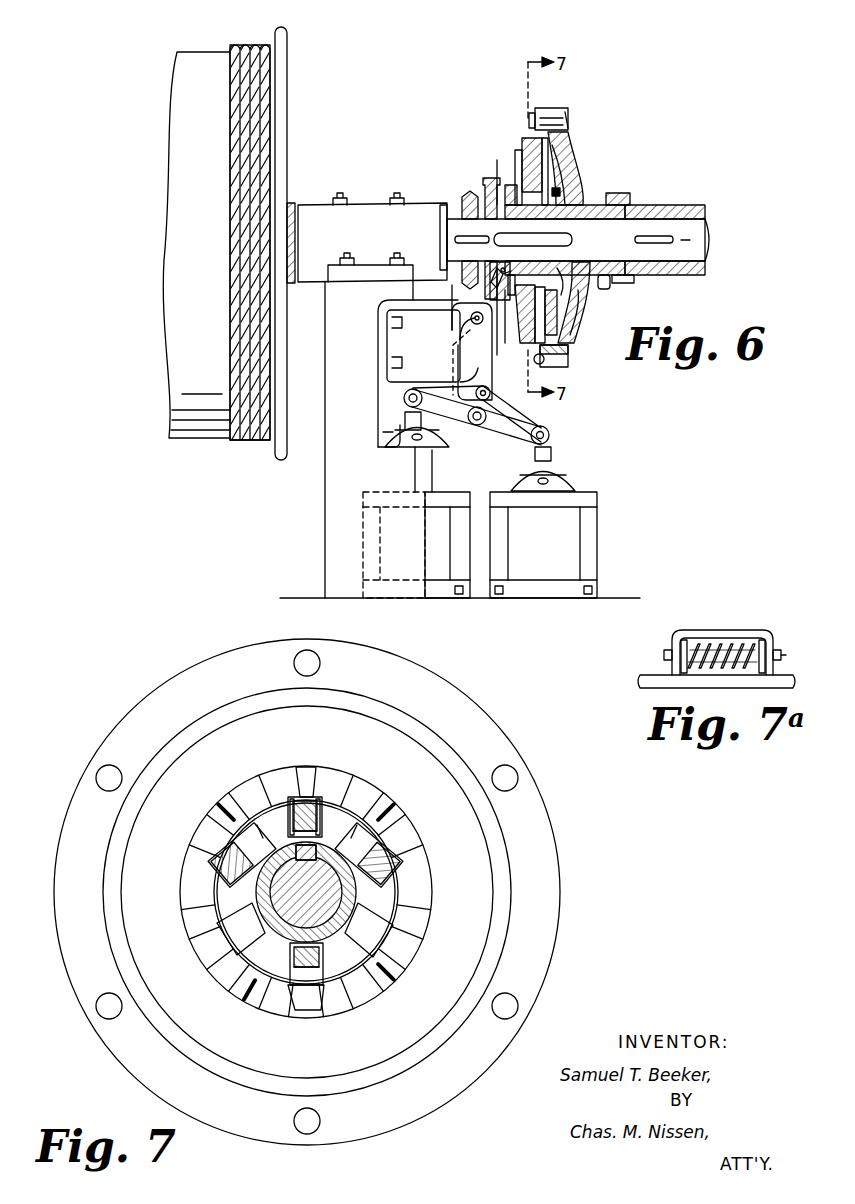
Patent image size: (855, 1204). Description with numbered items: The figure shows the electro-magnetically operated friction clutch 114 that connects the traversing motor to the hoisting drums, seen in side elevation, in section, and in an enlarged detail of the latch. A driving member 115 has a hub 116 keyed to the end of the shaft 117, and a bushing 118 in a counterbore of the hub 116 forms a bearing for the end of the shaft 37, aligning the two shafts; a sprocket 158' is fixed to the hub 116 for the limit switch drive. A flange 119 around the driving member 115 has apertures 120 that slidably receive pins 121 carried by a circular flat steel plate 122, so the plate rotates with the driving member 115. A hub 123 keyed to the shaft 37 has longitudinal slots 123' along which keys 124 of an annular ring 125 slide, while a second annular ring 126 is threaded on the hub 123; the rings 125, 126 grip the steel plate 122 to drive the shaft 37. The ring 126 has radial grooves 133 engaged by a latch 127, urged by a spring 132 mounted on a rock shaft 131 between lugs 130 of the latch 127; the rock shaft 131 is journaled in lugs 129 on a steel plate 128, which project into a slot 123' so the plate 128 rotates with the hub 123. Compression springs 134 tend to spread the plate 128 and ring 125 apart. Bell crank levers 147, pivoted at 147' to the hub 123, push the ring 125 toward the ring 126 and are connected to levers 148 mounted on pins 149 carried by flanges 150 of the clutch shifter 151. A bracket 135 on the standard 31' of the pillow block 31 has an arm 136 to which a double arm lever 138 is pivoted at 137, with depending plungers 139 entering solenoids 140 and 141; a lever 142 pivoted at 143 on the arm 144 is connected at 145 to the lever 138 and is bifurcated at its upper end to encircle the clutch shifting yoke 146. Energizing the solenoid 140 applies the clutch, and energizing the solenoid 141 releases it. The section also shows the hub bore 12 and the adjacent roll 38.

In FIG. 7, the hub bore 12 is at (360, 930).
In FIG. 6, the pillow block 31 is at (372, 201).
In FIG. 6, the standard 31' is at (456, 431).
In FIG. 6, the shaft 37 is at (612, 232).
In FIG. 7, the shaft 37 is at (328, 896).
In FIG. 6, the roll of material 38 is at (191, 88).
In FIG. 6, the clutch 114 is at (563, 88).
In FIG. 6, the driving member 115 is at (563, 196).
In FIG. 6, the hub 116 is at (648, 214).
In FIG. 6, the shaft 117 is at (688, 233).
In FIG. 6, the bushing 118 is at (598, 272).
In FIG. 6, the flange 119 is at (570, 113).
In FIG. 6, the apertures 120 is at (571, 127).
In FIG. 6, the pins 121 is at (549, 120).
In FIG. 7, the pins 121 is at (300, 658).
In FIG. 6, the steel plate 122 is at (533, 116).
In FIG. 7, the steel plate 122 is at (430, 687).
In FIG. 6, the hub 123 is at (478, 174).
In FIG. 7, the hub 123 is at (338, 831).
In FIG. 6, the slots 123' is at (513, 245).
In FIG. 7, the slots 123' is at (340, 936).
In FIG. 6, the keys 124 is at (560, 192).
In FIG. 6, the annular ring 125 is at (562, 162).
In FIG. 6, the annular ring 126 is at (522, 148).
In FIG. 7, the annular ring 126 is at (425, 772).
In FIG. 7, the latch 127 is at (307, 772).
In FIG. 7A, the latch 127 is at (700, 630).
In FIG. 6, the steel plate 128 is at (530, 140).
In FIG. 7, the steel plate 128 is at (490, 833).
In FIG. 7A, the steel plate 128 is at (658, 682).
In FIG. 7, the lugs 129 is at (319, 800).
In FIG. 7A, the lugs 129 is at (684, 640).
In FIG. 7, the lugs 130 is at (316, 803).
In FIG. 7A, the lugs 130 is at (676, 654).
In FIG. 7A, the rock shaft 131 is at (781, 653).
In FIG. 7, the spring 132 is at (298, 803).
In FIG. 7A, the spring 132 is at (730, 650).
In FIG. 7, the radial slots or grooves 133 is at (247, 797).
In FIG. 6, the compression springs 134 is at (551, 185).
In FIG. 6, the bracket 135 is at (420, 343).
In FIG. 6, the arm 136 is at (432, 430).
In FIG. 6, the pivot 137 is at (437, 420).
In FIG. 6, the double arm lever 138 is at (516, 425).
In FIG. 6, the plungers 139 is at (408, 463).
In FIG. 6, the solenoid 140 is at (435, 560).
In FIG. 6, the solenoid 141 is at (565, 551).
In FIG. 6, the lever 142 is at (440, 268).
In FIG. 6, the pivot 143 is at (470, 322).
In FIG. 6, the arm 144 is at (468, 334).
In FIG. 6, the pivot 145 is at (500, 396).
In FIG. 6, the clutch shifting yoke 146 is at (466, 200).
In FIG. 6, the bell crank levers 147 is at (587, 316).
In FIG. 7, the bell crank levers 147 is at (358, 820).
In FIG. 6, the pivots 147' is at (600, 320).
In FIG. 6, the levers 148 is at (488, 282).
In FIG. 6, the pins 149 is at (509, 319).
In FIG. 6, the flanges 150 is at (497, 160).
In FIG. 6, the clutch shifter 151 is at (490, 200).
In FIG. 6, the sprocket 158' is at (638, 292).